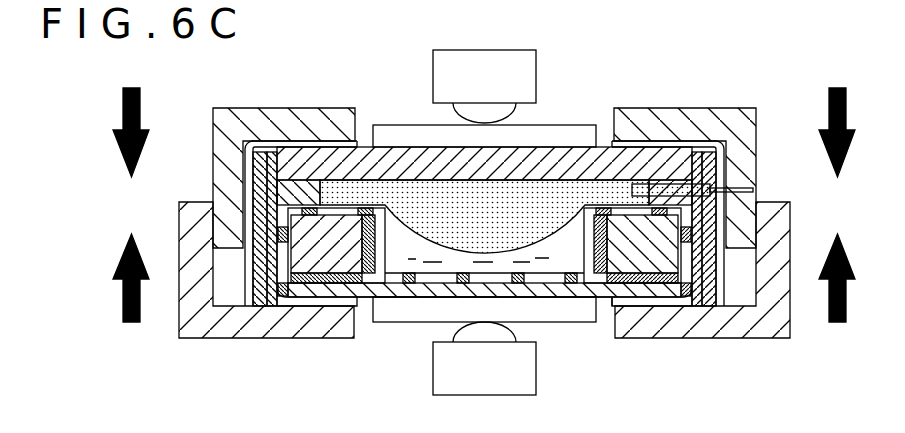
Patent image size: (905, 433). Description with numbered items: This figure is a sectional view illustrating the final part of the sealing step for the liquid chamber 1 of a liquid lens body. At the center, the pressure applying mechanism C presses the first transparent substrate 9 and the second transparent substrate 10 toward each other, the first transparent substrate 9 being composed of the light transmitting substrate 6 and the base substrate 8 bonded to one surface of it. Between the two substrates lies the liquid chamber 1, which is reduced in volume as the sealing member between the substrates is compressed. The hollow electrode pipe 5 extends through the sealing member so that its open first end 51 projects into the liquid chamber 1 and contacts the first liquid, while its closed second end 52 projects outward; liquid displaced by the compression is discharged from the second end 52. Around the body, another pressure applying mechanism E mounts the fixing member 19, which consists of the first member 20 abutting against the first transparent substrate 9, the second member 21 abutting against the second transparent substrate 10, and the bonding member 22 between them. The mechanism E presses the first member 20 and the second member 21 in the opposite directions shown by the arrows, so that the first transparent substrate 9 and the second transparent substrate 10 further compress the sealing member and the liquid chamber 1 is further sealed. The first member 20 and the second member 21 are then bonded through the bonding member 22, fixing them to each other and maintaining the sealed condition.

The liquid chamber 1 is at (405, 259).
The hollow electrode pipe 5 is at (704, 166).
The first end 51 is at (628, 186).
The second end 52 is at (753, 190).
The light transmitting substrate 6 is at (368, 299).
The base substrate 8 is at (310, 255).
The first transparent substrate 9 is at (600, 316).
The second transparent substrate 10 is at (372, 147).
The fixing member 19 is at (228, 278).
The first member 20 is at (333, 290).
The second member 21 is at (322, 140).
The bonding member 22 is at (262, 176).
The pressure applying mechanism E is at (290, 107).
The pressure applying mechanism C is at (537, 77).